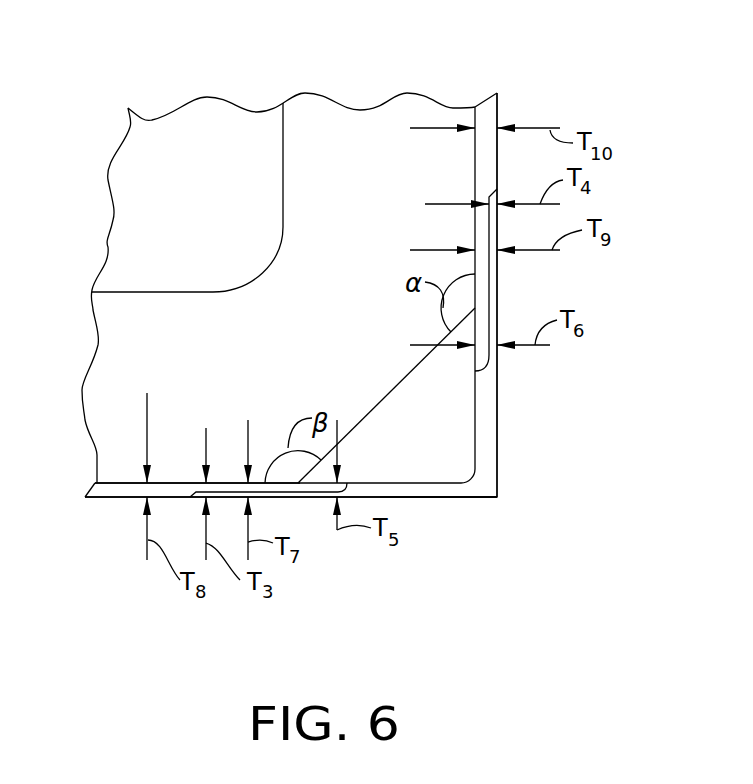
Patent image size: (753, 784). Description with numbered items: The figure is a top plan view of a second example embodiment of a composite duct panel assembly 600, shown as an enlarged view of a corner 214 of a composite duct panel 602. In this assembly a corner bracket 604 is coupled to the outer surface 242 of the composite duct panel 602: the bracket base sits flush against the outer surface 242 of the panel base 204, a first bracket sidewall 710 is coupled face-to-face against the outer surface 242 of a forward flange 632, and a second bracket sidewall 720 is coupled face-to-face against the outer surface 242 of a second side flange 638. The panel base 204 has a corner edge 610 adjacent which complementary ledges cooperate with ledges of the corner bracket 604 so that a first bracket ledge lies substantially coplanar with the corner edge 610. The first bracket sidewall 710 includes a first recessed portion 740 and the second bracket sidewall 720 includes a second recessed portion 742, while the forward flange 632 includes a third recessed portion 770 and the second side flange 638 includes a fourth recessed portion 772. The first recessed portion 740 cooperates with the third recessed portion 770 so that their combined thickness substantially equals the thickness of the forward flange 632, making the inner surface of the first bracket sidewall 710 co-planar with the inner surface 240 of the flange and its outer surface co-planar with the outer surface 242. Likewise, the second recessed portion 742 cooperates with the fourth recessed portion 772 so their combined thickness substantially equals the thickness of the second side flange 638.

The composite duct panel assembly 600 is at (467, 72).
The composite duct panel 602 is at (338, 115).
The second side flange 638 is at (487, 117).
The base 204 is at (349, 208).
The fourth recessed portion 772 is at (482, 237).
The second recessed portion 742 is at (492, 285).
The corner edge 610 is at (413, 367).
The corner 214 is at (374, 384).
The inner surface 240 is at (226, 383).
The third recessed portion 770 is at (222, 483).
The forward flange 632 is at (98, 498).
The outer surface 242 is at (128, 500).
The first recessed portion 740 is at (287, 494).
The second bracket sidewall 720 is at (487, 402).
The corner bracket 604 is at (487, 450).
The first bracket sidewall 710 is at (420, 488).